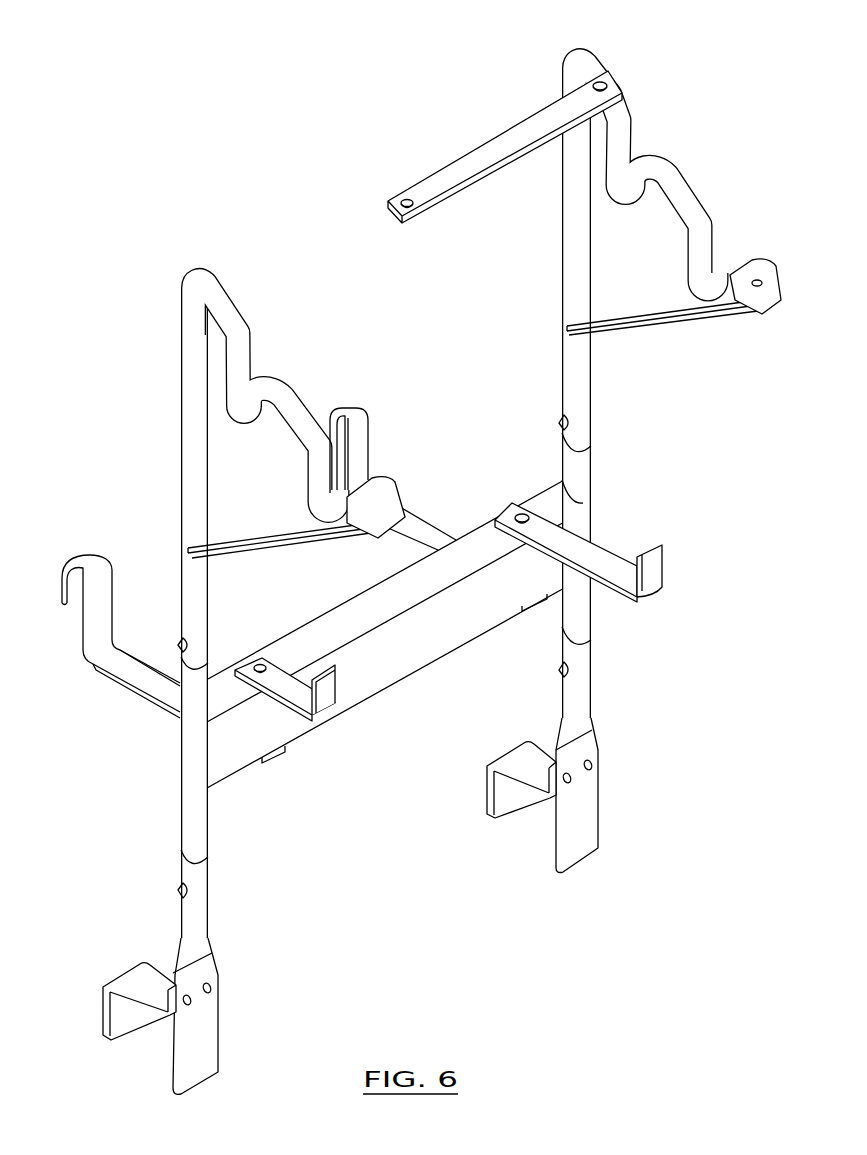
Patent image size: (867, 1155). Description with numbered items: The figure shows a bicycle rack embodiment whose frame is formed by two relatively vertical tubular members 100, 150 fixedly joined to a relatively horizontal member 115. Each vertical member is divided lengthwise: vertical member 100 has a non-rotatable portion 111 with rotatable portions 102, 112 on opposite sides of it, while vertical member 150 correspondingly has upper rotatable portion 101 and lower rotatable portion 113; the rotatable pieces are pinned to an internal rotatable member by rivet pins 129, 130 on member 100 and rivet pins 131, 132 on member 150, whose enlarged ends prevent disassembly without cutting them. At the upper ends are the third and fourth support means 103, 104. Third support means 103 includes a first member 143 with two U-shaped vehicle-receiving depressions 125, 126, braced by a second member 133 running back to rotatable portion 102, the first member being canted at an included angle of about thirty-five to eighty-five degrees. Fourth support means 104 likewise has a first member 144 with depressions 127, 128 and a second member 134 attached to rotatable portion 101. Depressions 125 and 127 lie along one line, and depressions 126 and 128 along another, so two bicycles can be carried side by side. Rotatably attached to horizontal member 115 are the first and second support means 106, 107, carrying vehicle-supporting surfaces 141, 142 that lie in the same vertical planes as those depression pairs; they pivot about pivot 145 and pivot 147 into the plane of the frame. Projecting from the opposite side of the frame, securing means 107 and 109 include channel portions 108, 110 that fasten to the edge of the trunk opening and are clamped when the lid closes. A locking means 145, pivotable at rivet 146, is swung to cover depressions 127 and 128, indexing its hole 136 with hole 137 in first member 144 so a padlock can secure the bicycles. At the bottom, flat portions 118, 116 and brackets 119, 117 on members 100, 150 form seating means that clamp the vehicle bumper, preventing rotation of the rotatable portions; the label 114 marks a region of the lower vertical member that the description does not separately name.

The relatively vertical member 100 is at (414, 561).
The rotatable portion 101 is at (570, 248).
The rotatable portion 102 is at (182, 388).
The third support means 103 is at (302, 431).
The fourth support means 104 is at (697, 215).
The first support means 106 is at (340, 629).
The second support means 107 is at (157, 680).
The channel portion 108 is at (63, 573).
The securing means 109 is at (413, 522).
The channel portion 110 is at (357, 410).
The non-rotatable portion 111 is at (190, 830).
The rotatable portion 112 is at (202, 905).
The rotatable portion 113 is at (585, 685).
The middle portion of right tube 114 is at (585, 615).
The relatively horizontal member 115 is at (441, 631).
The flat portion 116 is at (585, 825).
The bracket 117 is at (486, 787).
The flat portion 118 is at (200, 1035).
The bracket 119 is at (105, 1000).
The vehicle-receiving depression 125 is at (250, 398).
The vehicle-receiving depression 126 is at (336, 501).
The vehicle-receiving depression 127 is at (630, 180).
The vehicle-receiving depression 128 is at (713, 281).
The rivet pin 129 is at (182, 647).
The rivet pin 130 is at (178, 893).
The rivet pin 131 is at (560, 672).
The rivet pin 132 is at (560, 425).
The second member 133 is at (272, 545).
The second member 134 is at (657, 324).
The hole 136 is at (407, 199).
The hole 137 is at (764, 282).
The vehicle-supporting surface 141 is at (330, 693).
The vehicle-supporting surface 142 is at (658, 570).
The first member 143 is at (297, 434).
The first member 144 is at (679, 214).
The locking means 145 is at (450, 374).
The rivet 146 is at (606, 80).
The pivot 147 is at (522, 513).
The relatively vertical member 150 is at (604, 536).